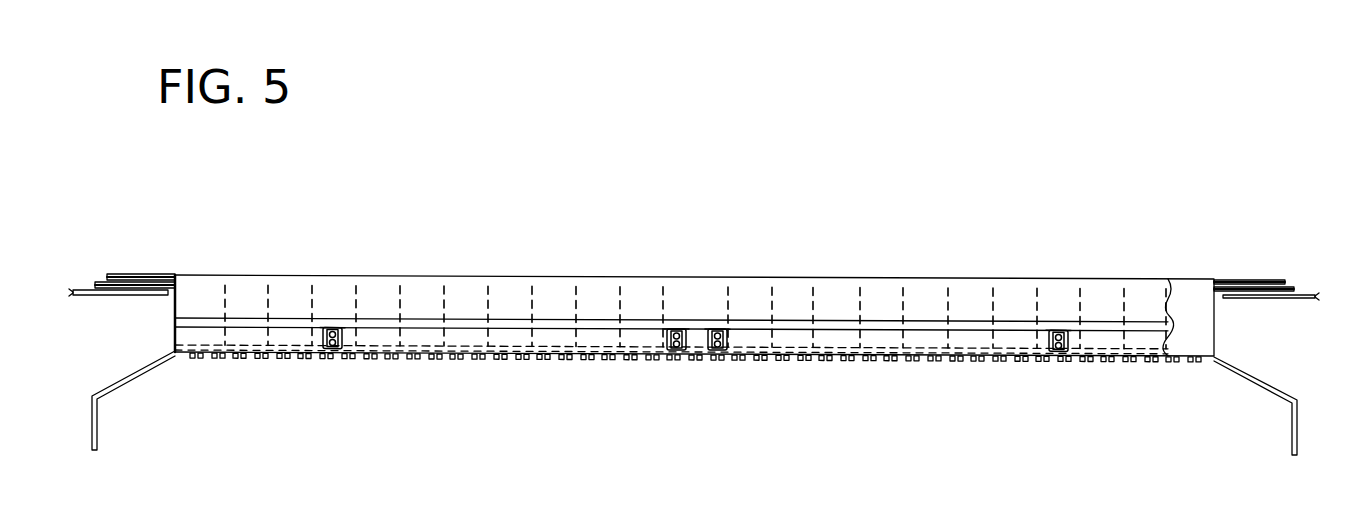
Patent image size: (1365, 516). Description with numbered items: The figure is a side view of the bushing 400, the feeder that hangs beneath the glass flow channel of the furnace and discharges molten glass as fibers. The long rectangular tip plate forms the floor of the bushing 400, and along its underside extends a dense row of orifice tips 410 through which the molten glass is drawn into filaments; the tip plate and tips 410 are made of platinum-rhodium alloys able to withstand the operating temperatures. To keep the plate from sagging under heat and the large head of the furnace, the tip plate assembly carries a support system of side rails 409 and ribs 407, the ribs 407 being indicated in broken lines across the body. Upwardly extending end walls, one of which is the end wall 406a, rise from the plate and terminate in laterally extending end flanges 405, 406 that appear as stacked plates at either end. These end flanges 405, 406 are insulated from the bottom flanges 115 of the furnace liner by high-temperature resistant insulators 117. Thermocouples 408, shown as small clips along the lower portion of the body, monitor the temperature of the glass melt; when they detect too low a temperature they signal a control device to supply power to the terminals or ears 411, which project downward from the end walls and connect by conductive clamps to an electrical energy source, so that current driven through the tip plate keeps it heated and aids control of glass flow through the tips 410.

The bushing 400 is at (424, 247).
The end flange 405 is at (1223, 280).
The end flange 406 is at (148, 273).
The end wall 406a is at (175, 305).
The rib 407 is at (862, 307).
The thermocouple 408 is at (667, 338).
The side rail 409 is at (972, 323).
The tip 410 is at (223, 362).
The terminal 411 is at (122, 374).
The bottom flange 115 is at (1303, 302).
The insulator 117 is at (1290, 290).